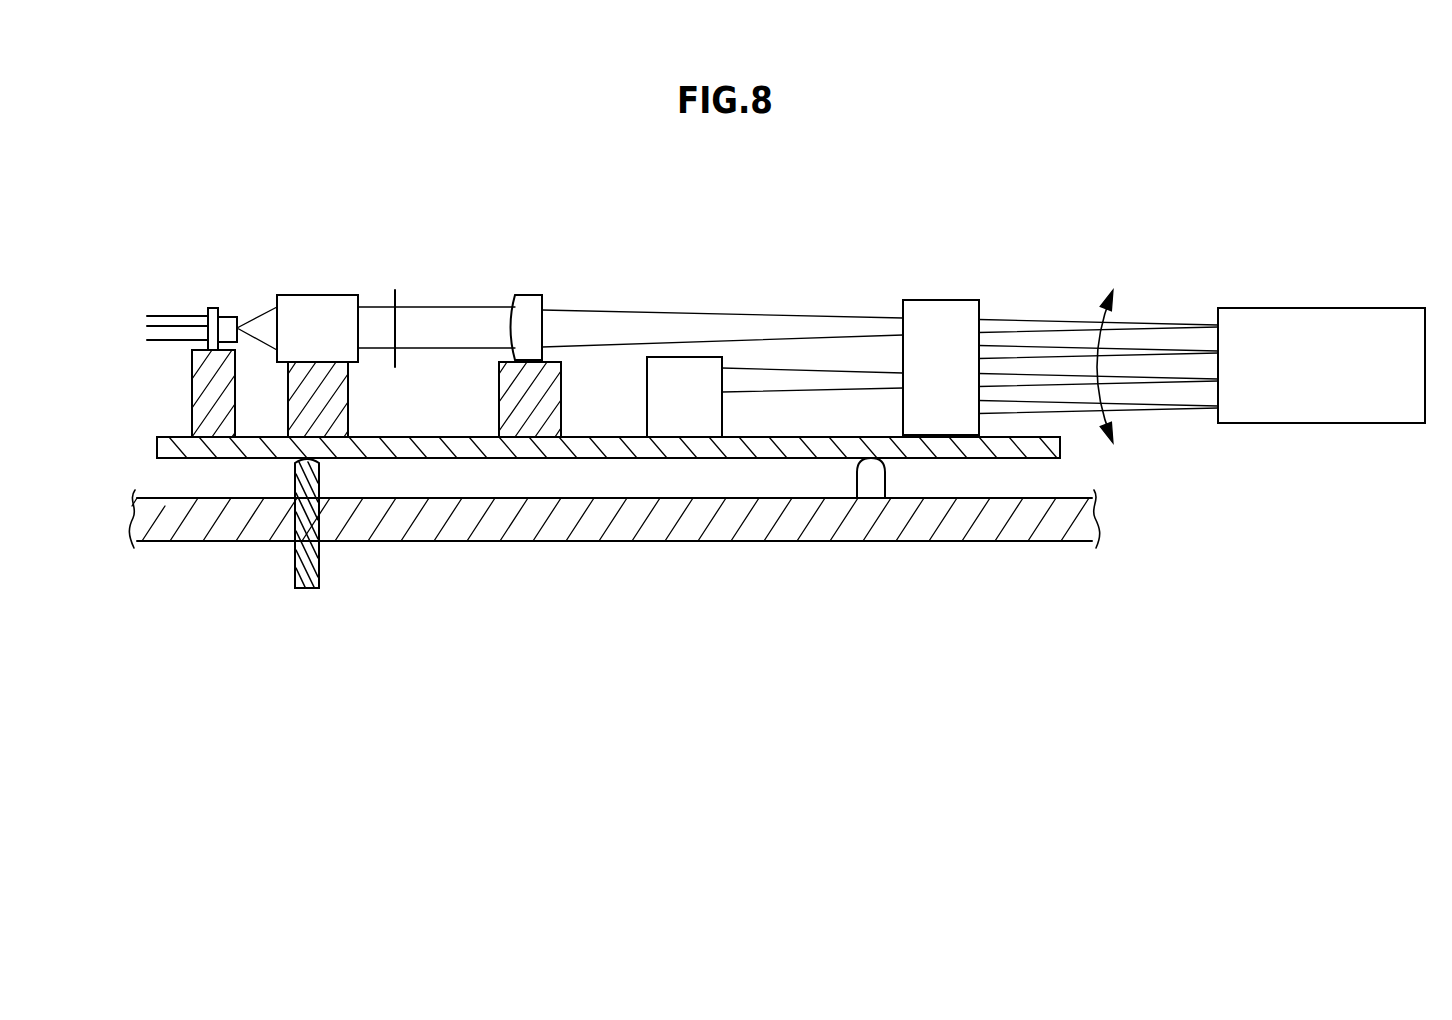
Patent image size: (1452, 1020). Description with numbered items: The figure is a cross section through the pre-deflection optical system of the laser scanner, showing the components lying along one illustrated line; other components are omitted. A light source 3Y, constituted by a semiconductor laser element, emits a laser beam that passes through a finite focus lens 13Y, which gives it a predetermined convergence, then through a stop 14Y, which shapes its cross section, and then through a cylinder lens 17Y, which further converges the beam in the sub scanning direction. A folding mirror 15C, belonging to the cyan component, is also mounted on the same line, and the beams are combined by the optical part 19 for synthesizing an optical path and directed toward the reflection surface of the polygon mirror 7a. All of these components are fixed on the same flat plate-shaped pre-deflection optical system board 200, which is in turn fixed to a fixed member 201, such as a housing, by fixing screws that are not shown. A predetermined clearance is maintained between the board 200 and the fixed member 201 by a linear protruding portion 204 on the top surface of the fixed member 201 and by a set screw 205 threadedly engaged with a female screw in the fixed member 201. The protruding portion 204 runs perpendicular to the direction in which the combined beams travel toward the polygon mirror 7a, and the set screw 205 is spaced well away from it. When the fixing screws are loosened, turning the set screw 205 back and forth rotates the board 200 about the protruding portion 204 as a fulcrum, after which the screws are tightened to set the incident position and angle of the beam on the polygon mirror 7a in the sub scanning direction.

The light source 3Y is at (217, 305).
The finite focus lens 13Y is at (320, 300).
The stop 14Y is at (395, 300).
The cylinder lens 17Y is at (532, 300).
The folding mirror 15C is at (682, 367).
The optical part for synthesizing an optical path 19 is at (940, 305).
The polygon mirror 7a is at (1312, 317).
The pre-deflection optical system board 200 is at (165, 440).
The fixed member 201 is at (1083, 524).
The protruding portion 204 is at (867, 473).
The set screw 205 is at (305, 590).